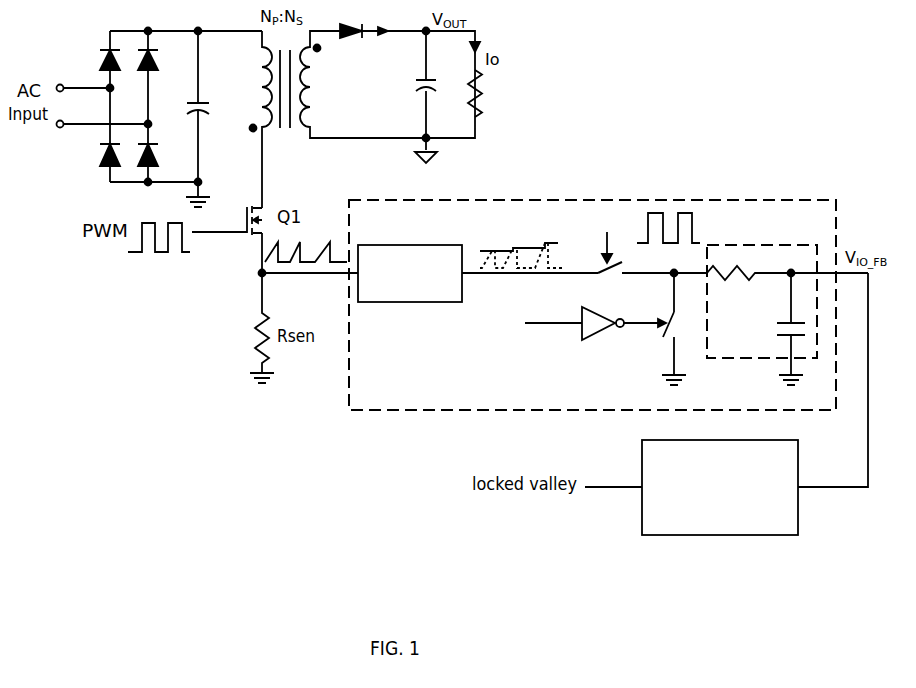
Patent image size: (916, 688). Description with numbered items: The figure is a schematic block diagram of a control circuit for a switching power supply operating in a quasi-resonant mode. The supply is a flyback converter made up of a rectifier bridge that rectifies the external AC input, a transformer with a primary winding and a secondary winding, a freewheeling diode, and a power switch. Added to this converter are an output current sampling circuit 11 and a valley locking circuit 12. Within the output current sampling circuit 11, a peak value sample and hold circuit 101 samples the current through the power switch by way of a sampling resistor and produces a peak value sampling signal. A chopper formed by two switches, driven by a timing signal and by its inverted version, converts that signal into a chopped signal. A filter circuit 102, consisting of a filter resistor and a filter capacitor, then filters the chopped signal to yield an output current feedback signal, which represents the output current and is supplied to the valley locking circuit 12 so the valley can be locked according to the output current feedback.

The peak value sample and hold circuit 101 is at (425, 283).
The filter circuit 102 is at (753, 245).
The output current sampling circuit 11 is at (522, 406).
The valley locking circuit 12 is at (729, 526).